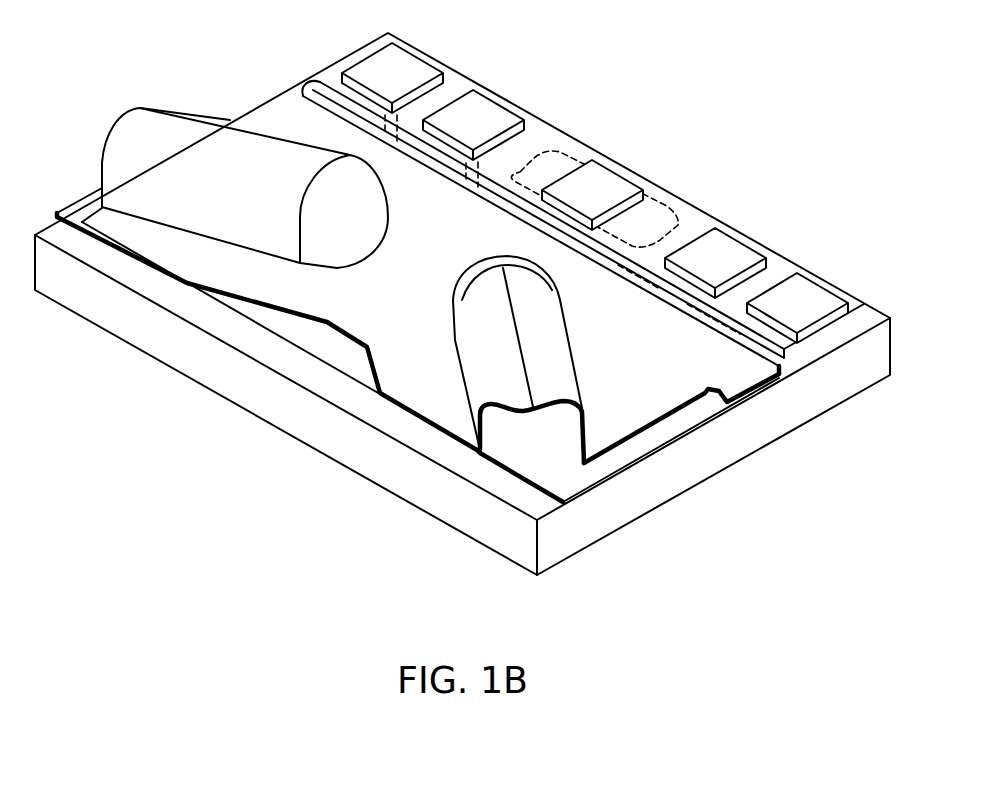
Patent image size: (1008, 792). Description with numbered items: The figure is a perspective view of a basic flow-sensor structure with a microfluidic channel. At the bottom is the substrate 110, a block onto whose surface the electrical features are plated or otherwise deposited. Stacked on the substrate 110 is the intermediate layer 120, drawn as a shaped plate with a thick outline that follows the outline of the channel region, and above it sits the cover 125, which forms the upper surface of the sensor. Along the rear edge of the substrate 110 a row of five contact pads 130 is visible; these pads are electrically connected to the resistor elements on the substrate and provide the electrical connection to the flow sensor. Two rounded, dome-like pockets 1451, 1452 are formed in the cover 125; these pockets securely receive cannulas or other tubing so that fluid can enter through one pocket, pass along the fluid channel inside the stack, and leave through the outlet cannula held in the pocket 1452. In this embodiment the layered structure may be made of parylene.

The substrate 110 is at (860, 364).
The intermediate layer 120 is at (580, 476).
The cover 125 is at (737, 368).
The contact pads 130 is at (817, 295).
The pocket 1451 is at (567, 377).
The pocket 1452 is at (162, 137).